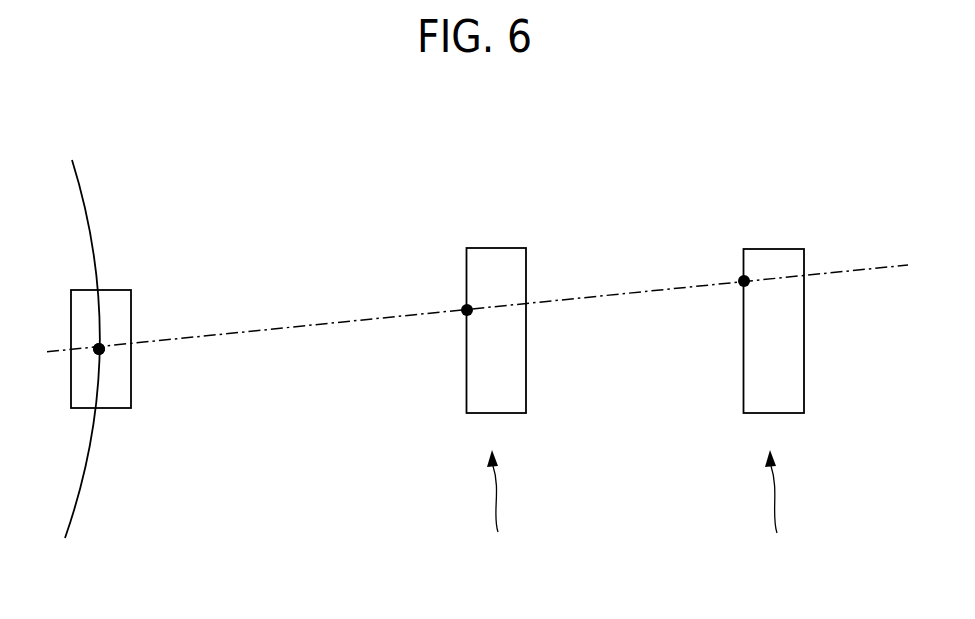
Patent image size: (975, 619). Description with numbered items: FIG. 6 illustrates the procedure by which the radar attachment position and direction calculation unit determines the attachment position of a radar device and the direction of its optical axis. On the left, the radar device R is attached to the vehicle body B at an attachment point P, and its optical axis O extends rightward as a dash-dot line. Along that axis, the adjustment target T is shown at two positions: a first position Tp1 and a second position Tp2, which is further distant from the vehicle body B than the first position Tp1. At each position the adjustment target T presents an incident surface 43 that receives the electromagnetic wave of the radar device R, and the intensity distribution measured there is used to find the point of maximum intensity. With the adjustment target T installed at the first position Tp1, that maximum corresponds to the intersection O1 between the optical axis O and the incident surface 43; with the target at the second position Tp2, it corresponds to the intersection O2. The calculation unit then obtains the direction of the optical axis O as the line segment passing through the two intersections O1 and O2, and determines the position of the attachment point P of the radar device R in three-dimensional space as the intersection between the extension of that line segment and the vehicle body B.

The vehicle body B is at (74, 174).
The radar device R is at (118, 298).
The optical axis O is at (465, 316).
The attachment point P is at (102, 357).
The adjustment target T is at (507, 258).
The incident surface 43 is at (589, 294).
The intersection O1 is at (466, 309).
The intersection O2 is at (743, 280).
The first position Tp1 is at (497, 505).
The second position Tp2 is at (773, 505).